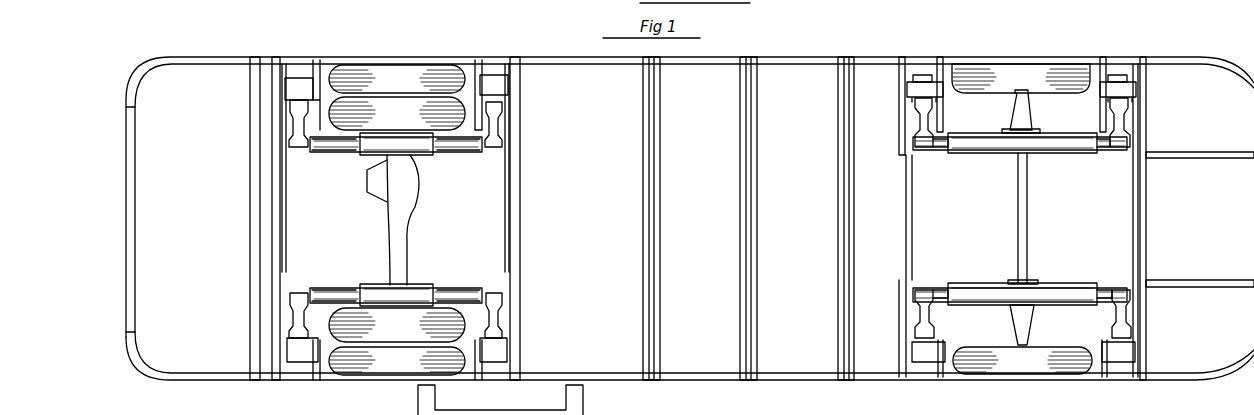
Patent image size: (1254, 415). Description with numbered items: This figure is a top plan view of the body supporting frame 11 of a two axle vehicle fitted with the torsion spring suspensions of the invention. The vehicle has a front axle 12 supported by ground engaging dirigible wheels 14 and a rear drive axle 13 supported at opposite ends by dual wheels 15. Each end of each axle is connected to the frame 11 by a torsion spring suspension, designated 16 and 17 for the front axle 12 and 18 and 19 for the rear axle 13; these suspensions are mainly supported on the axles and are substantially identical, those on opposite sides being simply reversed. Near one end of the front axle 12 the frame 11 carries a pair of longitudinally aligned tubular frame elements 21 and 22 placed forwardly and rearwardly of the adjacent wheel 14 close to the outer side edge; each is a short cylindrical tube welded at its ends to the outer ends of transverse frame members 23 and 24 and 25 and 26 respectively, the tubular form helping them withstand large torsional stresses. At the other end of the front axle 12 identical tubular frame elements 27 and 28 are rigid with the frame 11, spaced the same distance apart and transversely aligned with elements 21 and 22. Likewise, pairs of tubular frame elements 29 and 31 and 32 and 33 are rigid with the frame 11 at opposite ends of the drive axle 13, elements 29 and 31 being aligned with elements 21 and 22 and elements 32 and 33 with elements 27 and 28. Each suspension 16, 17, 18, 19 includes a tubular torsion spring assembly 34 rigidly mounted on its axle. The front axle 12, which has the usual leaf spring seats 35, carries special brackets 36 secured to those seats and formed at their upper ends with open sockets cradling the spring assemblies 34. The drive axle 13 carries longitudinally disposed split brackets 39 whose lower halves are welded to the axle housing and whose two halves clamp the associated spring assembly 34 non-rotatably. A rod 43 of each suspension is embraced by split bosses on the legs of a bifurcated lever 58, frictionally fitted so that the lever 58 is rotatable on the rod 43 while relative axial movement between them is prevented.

The body supporting frame 11 is at (679, 71).
The front axle 12 is at (1028, 215).
The rear drive axle 13 is at (407, 226).
The dirigible wheels 14 is at (990, 74).
The dual wheels 15 is at (428, 76).
The torsion spring suspension 16 is at (975, 152).
The torsion spring suspension 17 is at (972, 285).
The torsion spring suspension 18 is at (461, 152).
The torsion spring suspension 19 is at (455, 286).
The tubular frame element 21 is at (1118, 82).
The tubular frame element 22 is at (915, 82).
The transverse frame member 23 is at (1144, 62).
The transverse frame member 24 is at (1102, 75).
The transverse frame member 25 is at (940, 62).
The transverse frame member 26 is at (903, 60).
The tubular frame element 27 is at (1131, 360).
The tubular frame element 28 is at (925, 360).
The tubular frame element 29 is at (493, 85).
The tubular frame element 31 is at (290, 85).
The tubular frame element 32 is at (490, 355).
The tubular frame element 33 is at (300, 355).
The tubular torsion spring assembly 34 is at (340, 152).
The leaf spring seats 35 is at (1030, 153).
The bracket 36 is at (1010, 153).
The split bracket 39 is at (417, 156).
The rod 43 is at (1100, 138).
The bifurcated lever 58 is at (1126, 118).